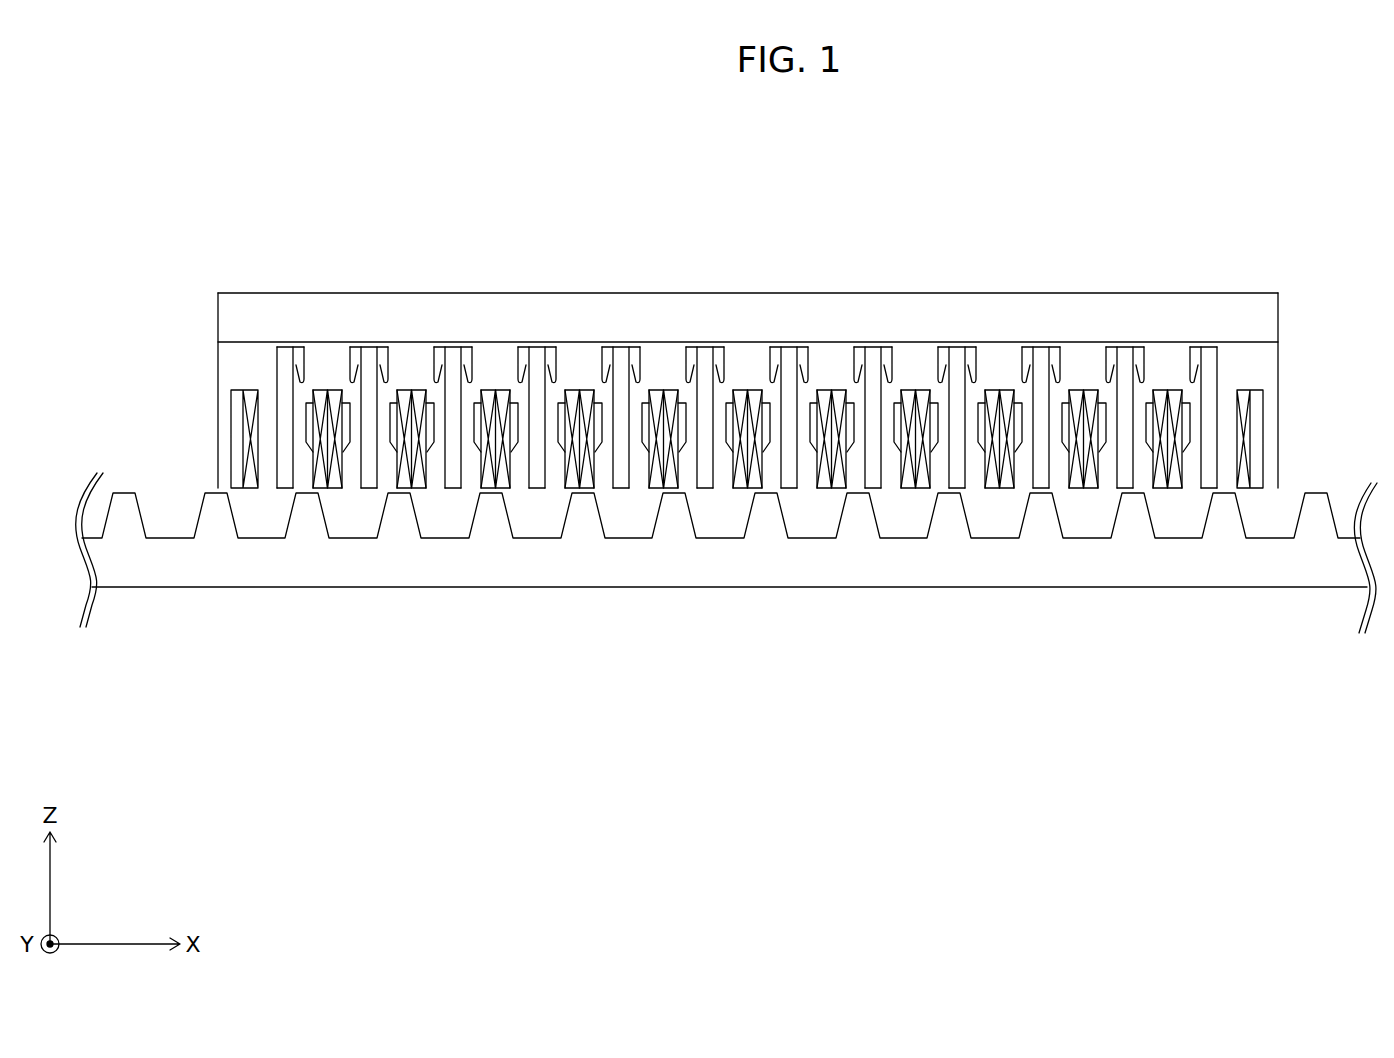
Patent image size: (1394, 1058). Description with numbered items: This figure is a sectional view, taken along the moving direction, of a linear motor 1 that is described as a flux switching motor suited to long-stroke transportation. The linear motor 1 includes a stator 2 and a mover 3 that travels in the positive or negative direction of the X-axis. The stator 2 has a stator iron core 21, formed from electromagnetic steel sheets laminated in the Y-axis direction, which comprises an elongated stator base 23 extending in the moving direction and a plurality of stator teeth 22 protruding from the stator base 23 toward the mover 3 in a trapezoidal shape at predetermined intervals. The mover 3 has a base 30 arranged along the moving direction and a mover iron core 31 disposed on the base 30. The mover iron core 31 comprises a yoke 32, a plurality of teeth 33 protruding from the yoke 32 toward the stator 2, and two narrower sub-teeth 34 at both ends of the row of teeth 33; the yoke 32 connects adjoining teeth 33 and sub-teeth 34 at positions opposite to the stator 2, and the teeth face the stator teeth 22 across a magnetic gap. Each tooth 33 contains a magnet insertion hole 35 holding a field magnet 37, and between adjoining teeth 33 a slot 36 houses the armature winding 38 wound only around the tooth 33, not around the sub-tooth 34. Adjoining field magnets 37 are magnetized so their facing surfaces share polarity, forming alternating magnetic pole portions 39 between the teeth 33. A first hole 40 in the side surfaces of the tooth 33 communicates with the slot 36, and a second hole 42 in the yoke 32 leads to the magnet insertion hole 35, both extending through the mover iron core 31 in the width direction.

The linear motor 1 is at (1019, 200).
The stator 2 is at (643, 603).
The mover 3 is at (683, 280).
The stator iron core 21 is at (496, 578).
The stator teeth 22 is at (765, 500).
The stator base 23 is at (847, 558).
The base 30 is at (788, 322).
The mover iron core 31 is at (655, 348).
The yoke 32 is at (1069, 355).
The teeth 33 is at (268, 478).
The sub-teeth 34 is at (225, 477).
The magnet insertion hole 35 is at (1130, 465).
The slot 36 is at (1100, 445).
The field magnets 37 is at (1125, 367).
The armature windings 38 is at (1075, 390).
The magnetic pole portions 39 is at (992, 387).
The first hole 40 is at (995, 427).
The second hole 42 is at (973, 355).